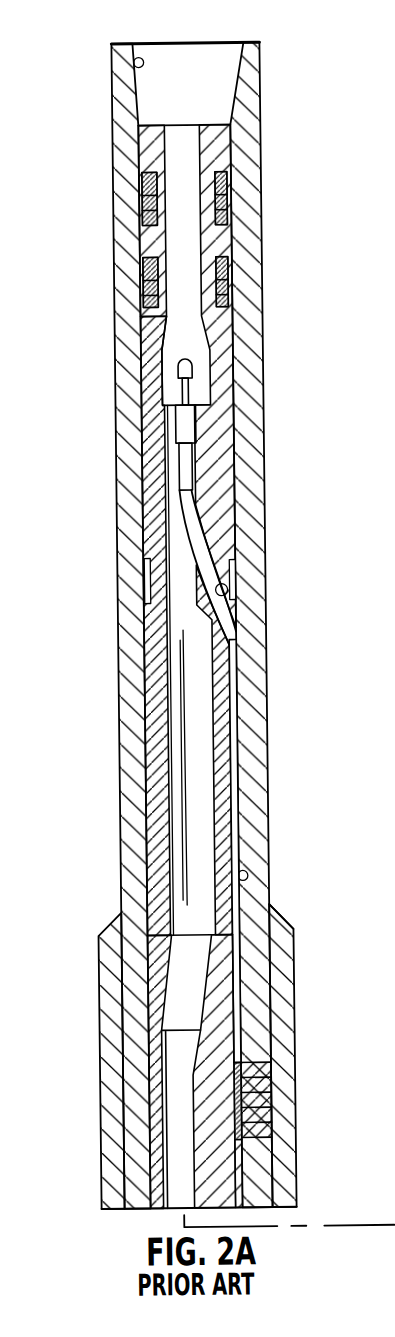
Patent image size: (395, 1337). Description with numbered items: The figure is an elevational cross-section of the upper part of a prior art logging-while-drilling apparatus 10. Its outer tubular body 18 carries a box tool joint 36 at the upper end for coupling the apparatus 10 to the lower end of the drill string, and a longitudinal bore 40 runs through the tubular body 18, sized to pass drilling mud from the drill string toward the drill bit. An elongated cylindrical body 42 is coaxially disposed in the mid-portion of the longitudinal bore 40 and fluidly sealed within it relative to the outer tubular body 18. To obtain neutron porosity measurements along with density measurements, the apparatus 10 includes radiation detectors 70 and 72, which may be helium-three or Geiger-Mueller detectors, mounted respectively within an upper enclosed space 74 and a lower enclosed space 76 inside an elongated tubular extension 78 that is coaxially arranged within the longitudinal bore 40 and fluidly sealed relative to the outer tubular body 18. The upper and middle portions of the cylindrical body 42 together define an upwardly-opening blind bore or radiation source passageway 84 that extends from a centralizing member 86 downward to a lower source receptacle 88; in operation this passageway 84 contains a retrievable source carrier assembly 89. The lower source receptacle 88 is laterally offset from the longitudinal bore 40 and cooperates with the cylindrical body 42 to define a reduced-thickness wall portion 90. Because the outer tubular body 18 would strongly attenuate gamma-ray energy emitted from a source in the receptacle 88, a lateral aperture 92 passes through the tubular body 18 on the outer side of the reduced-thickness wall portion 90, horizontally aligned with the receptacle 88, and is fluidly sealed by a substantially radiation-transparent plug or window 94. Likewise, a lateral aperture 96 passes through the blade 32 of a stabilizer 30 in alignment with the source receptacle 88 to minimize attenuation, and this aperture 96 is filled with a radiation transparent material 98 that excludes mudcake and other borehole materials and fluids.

The LWD apparatus 10 is at (80, 1186).
The outer tubular body 18 is at (130, 619).
The stabilizer 30 is at (106, 1018).
The blade 32 is at (277, 951).
The box tool joint 36 is at (141, 66).
The longitudinal bore 40 is at (177, 738).
The elongated cylindrical body 42 is at (158, 811).
The radiation detector 70 is at (148, 192).
The radiation detector 72 is at (148, 270).
The upper enclosed space 74 is at (148, 226).
The lower enclosed space 76 is at (149, 305).
The elongated tubular extension 78 is at (157, 352).
The radiation source passageway 84 is at (229, 590).
The centralizing member 86 is at (203, 463).
The lower source receptacle 88 is at (289, 1138).
The retrievable source carrier assembly 89 is at (237, 675).
The reduced-thickness wall portion 90 is at (262, 1071).
The lateral aperture 92 is at (260, 1063).
The radiation-transparent window 94 is at (284, 1090).
The lateral aperture 96 is at (287, 1126).
The radiation transparent material 98 is at (278, 1080).